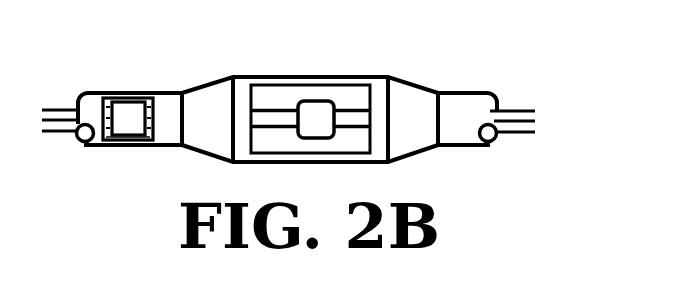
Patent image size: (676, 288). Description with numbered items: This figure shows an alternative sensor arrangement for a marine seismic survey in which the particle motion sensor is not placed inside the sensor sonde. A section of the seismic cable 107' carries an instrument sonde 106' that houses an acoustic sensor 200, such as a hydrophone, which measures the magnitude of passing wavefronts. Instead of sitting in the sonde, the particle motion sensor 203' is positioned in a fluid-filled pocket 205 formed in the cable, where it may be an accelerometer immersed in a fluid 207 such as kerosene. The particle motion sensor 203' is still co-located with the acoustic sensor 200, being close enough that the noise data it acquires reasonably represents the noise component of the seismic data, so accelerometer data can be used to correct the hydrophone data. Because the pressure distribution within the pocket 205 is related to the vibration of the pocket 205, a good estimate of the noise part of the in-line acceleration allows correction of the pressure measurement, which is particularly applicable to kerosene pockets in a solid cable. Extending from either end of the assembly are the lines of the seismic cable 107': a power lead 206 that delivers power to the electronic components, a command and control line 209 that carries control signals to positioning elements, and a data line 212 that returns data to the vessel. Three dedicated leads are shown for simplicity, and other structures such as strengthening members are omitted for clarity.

The instrument sonde 106' is at (303, 89).
The seismic cable 107' is at (100, 90).
The acoustic sensor 200 is at (315, 110).
The particle motion sensor 203' is at (153, 96).
The fluid-filled pocket 205 is at (103, 92).
The power lead 206 is at (535, 108).
The fluid 207 is at (110, 137).
The command and control line 209 is at (535, 124).
The data line 212 is at (535, 135).